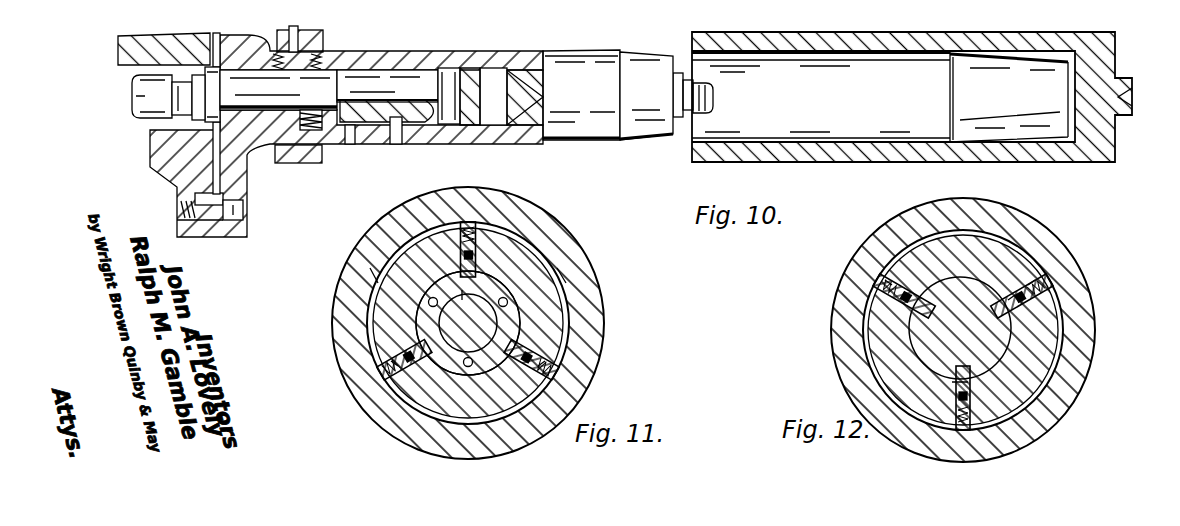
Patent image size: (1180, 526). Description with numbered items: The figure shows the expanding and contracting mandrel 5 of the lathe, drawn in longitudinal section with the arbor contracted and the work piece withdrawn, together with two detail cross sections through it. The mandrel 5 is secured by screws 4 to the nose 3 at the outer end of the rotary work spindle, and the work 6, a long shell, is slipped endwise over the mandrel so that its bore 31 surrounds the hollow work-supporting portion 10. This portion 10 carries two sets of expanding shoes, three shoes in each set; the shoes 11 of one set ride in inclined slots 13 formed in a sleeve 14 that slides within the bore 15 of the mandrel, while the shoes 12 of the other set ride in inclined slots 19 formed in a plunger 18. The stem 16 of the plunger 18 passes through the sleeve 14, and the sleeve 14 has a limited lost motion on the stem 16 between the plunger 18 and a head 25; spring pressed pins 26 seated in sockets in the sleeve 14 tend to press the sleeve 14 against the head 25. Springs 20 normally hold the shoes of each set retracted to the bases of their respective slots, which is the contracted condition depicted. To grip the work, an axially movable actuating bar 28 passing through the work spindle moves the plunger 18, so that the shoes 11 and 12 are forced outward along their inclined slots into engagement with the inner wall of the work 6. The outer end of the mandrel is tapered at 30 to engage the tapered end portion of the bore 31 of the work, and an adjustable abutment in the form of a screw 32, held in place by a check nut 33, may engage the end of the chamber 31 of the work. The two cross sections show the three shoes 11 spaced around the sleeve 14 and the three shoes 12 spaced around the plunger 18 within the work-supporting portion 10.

In FIG. 10, the nose 3 is at (158, 167).
In FIG. 10, the screws 4 is at (222, 233).
In FIG. 10, the mandrel 5 is at (237, 177).
In FIG. 11, the mandrel 5 is at (433, 250).
In FIG. 10, the work 6 is at (1017, 37).
In FIG. 11, the work 6 is at (335, 330).
In FIG. 12, the work 6 is at (1070, 387).
In FIG. 12, the work-supporting portion 10 is at (870, 335).
In FIG. 10, the expanding shoes 11 is at (292, 26).
In FIG. 11, the expanding shoes 11 is at (471, 222).
In FIG. 10, the expanding shoes 12 is at (363, 145).
In FIG. 12, the expanding shoes 12 is at (880, 280).
In FIG. 10, the inclined slots 13 is at (300, 37).
In FIG. 11, the inclined slots 13 is at (500, 235).
In FIG. 10, the sleeve 14 is at (251, 35).
In FIG. 11, the sleeve 14 is at (555, 308).
In FIG. 10, the bore 15 is at (493, 72).
In FIG. 10, the stem 16 is at (335, 88).
In FIG. 11, the stem 16 is at (543, 245).
In FIG. 10, the plunger 18 is at (395, 77).
In FIG. 12, the plunger 18 is at (975, 297).
In FIG. 10, the inclined slots 19 is at (392, 147).
In FIG. 12, the inclined slots 19 is at (927, 297).
In FIG. 10, the springs 20 is at (348, 147).
In FIG. 11, the springs 20 is at (462, 215).
In FIG. 12, the springs 20 is at (1027, 277).
In FIG. 10, the head 25 is at (217, 33).
In FIG. 10, the spring pressed pins 26 is at (318, 132).
In FIG. 11, the spring pressed pins 26 is at (423, 302).
In FIG. 10, the actuating bar 28 is at (133, 116).
In FIG. 10, the tapered end 30 is at (653, 50).
In FIG. 10, the bore 31 is at (907, 67).
In FIG. 10, the screw 32 is at (716, 94).
In FIG. 10, the check nut 33 is at (682, 125).